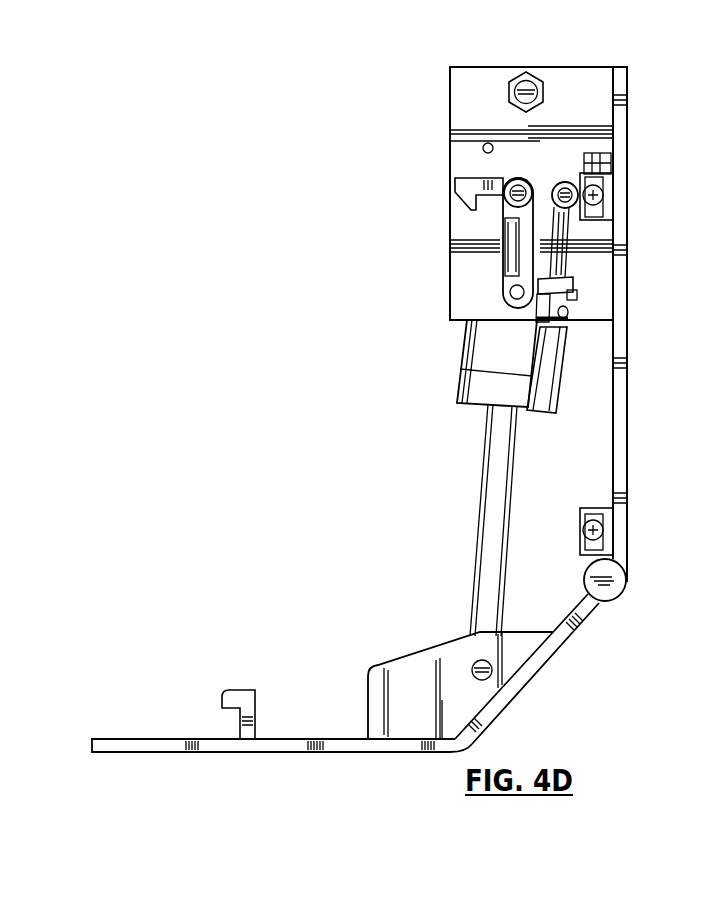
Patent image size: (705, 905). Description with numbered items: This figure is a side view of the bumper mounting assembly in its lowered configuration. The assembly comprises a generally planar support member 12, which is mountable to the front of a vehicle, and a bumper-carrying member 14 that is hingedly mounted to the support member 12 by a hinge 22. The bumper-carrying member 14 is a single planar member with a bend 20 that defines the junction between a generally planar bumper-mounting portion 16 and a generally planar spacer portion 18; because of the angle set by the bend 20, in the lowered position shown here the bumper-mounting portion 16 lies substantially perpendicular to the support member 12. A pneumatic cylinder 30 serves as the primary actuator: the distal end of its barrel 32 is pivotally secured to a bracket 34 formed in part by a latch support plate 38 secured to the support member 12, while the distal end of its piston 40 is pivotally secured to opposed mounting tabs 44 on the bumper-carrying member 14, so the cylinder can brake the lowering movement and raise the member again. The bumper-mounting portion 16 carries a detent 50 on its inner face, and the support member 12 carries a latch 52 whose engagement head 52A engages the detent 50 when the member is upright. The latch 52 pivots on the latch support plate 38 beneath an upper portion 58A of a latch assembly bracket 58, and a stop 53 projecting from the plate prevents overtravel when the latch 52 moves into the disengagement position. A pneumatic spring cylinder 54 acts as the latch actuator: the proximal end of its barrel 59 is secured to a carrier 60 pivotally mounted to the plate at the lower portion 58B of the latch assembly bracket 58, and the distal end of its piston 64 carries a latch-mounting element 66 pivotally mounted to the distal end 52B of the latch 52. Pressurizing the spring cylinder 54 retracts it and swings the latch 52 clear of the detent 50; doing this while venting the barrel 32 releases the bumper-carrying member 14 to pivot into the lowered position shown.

The support member 12 is at (622, 429).
The bumper-carrying member 14 is at (330, 743).
The bumper-mounting portion 16 is at (233, 743).
The spacer portion 18 is at (502, 698).
The bend 20 is at (453, 752).
The hinge 22 is at (612, 588).
The pneumatic cylinder 30 is at (523, 370).
The barrel 32 is at (492, 355).
The bracket 34 is at (535, 65).
The latch support plate 38 is at (588, 79).
The piston 40 is at (499, 503).
The mounting tabs 44 is at (406, 665).
The detent 50 is at (243, 690).
The latch 52 is at (520, 174).
The engagement head 52A is at (456, 180).
The distal end of the latch 52B is at (577, 172).
The stop 53 is at (486, 143).
The pneumatic spring cylinder 54 is at (573, 335).
The latch assembly bracket 58 is at (533, 175).
The upper portion of latch assembly bracket 58A is at (538, 178).
The lower portion of latch assembly bracket 58B is at (502, 303).
The barrel of pneumatic spring cylinder 59 is at (553, 374).
The carrier 60 is at (578, 295).
The piston of pneumatic spring cylinder 64 is at (560, 268).
The latch-mounting element 66 is at (590, 230).